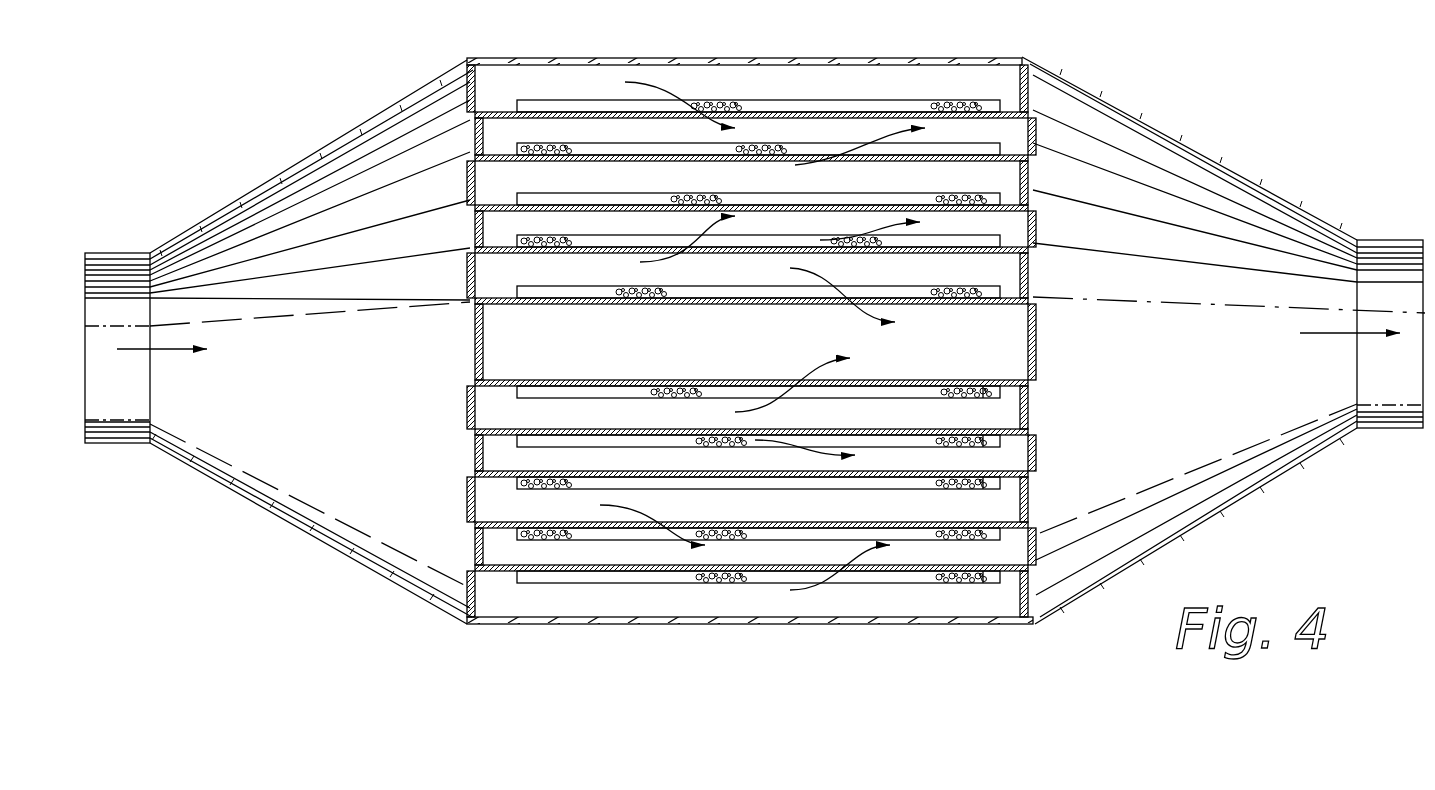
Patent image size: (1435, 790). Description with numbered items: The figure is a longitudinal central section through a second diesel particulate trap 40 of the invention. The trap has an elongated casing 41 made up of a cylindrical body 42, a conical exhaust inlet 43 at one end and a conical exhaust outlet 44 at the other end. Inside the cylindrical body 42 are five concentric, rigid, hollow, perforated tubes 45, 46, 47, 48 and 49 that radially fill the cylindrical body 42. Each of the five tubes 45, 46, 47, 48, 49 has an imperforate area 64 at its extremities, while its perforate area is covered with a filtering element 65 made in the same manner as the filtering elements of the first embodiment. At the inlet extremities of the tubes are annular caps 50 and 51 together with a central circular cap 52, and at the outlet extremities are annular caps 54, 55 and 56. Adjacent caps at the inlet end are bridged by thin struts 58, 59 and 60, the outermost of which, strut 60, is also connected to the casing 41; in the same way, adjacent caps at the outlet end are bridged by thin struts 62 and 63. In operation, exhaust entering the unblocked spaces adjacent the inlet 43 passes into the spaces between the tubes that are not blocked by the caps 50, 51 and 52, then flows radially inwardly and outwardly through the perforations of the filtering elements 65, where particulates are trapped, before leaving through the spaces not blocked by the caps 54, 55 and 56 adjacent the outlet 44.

The diesel particulate trap 40 is at (1190, 100).
The elongated casing 41 is at (975, 55).
The cylindrical body 42 is at (797, 57).
The conical exhaust inlet 43 is at (336, 546).
The conical exhaust outlet 44 is at (1255, 182).
The perforated tube 45 is at (997, 378).
The perforated tube 46 is at (1012, 422).
The perforated tube 47 is at (1014, 470).
The perforated tube 48 is at (1003, 495).
The perforated tube 49 is at (1000, 565).
The annular cap 50 is at (476, 118).
The annular cap 51 is at (478, 233).
The central circular cap 52 is at (478, 345).
The annular cap 54 is at (1033, 268).
The annular cap 55 is at (1033, 180).
The annular cap 56 is at (1060, 70).
The thin strut 58 is at (470, 408).
The thin strut 59 is at (470, 497).
The thin strut 60 is at (470, 600).
The thin strut 62 is at (1035, 458).
The thin strut 63 is at (1040, 537).
The imperforate area 64 is at (522, 373).
The filtering element 65 is at (585, 145).